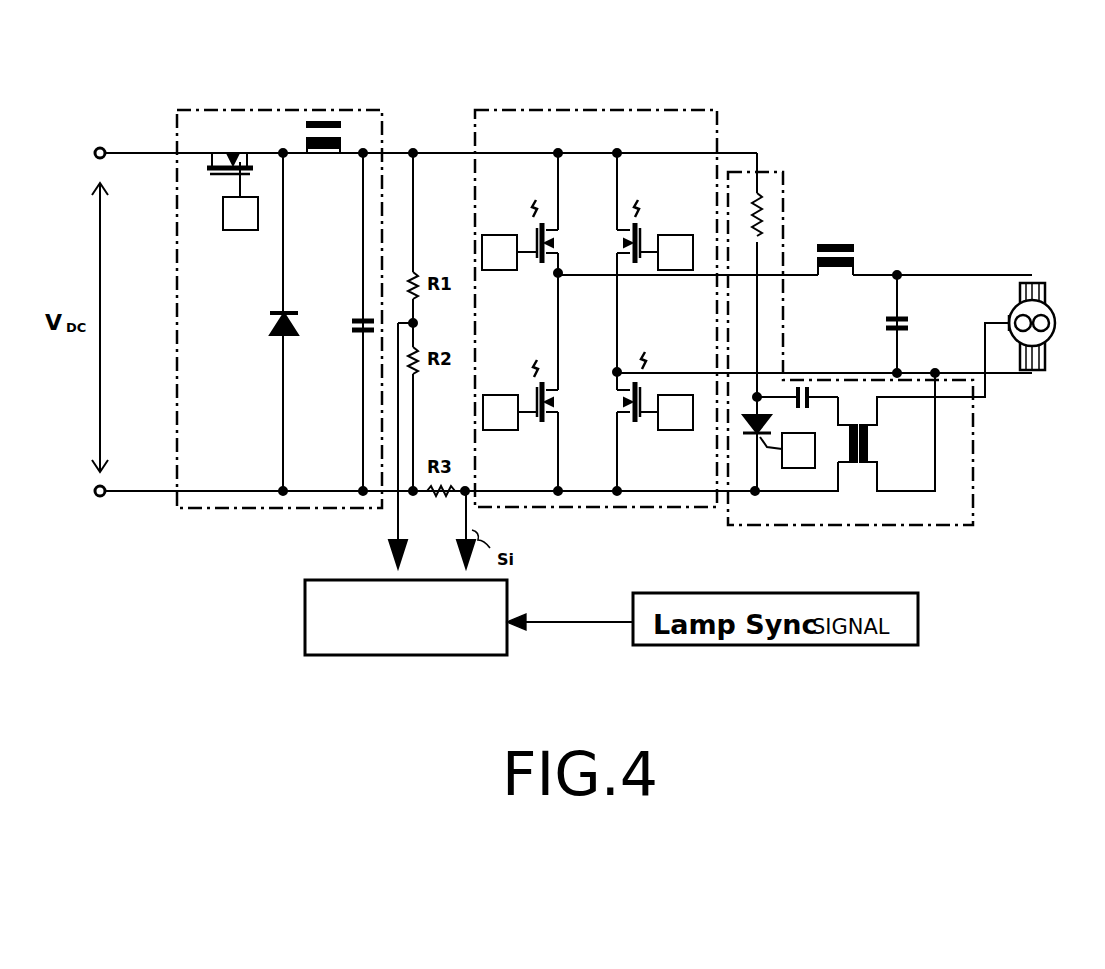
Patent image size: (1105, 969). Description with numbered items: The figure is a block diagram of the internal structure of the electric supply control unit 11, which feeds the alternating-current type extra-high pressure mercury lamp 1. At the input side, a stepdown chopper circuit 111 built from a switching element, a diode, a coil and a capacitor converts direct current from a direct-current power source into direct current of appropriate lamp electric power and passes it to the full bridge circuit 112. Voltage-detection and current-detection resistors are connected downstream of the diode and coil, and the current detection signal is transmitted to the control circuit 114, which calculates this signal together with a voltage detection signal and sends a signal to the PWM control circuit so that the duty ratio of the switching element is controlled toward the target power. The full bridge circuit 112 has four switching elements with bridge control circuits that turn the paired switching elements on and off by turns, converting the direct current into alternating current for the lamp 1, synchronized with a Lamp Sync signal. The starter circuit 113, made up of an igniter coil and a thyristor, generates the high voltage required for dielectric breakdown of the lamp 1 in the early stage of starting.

The extra-high pressure mercury lamp 1 is at (1056, 326).
The electric supply control unit 11 is at (740, 133).
The stepdown chopper circuit 111 is at (277, 108).
The full bridge circuit 112 is at (592, 110).
The starter circuit 113 is at (882, 527).
The control circuit 114 is at (435, 655).